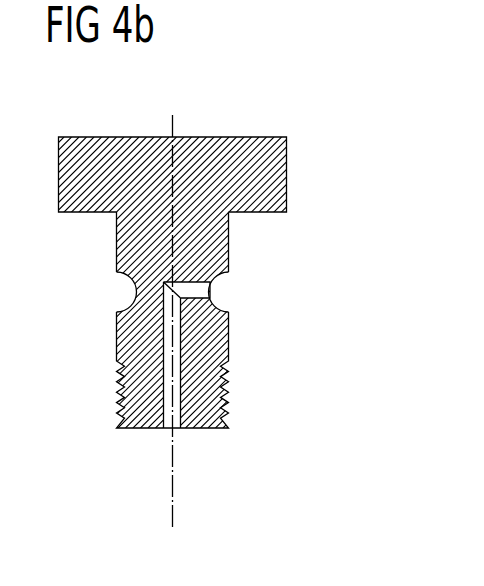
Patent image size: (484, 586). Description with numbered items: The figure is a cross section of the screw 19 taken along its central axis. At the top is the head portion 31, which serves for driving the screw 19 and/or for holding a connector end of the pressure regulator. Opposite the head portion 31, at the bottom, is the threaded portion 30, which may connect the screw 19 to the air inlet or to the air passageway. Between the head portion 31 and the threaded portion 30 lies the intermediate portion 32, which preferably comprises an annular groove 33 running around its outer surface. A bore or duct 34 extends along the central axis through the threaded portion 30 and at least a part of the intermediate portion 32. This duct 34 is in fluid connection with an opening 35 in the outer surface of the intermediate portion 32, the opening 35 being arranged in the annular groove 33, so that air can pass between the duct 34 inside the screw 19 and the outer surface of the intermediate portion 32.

The screw 19 is at (310, 306).
The threaded portion 30 is at (228, 388).
The head portion 31 is at (272, 175).
The intermediate portion 32 is at (127, 240).
The annular groove 33 is at (130, 292).
The bore or duct 34 is at (167, 348).
The opening 35 is at (213, 291).